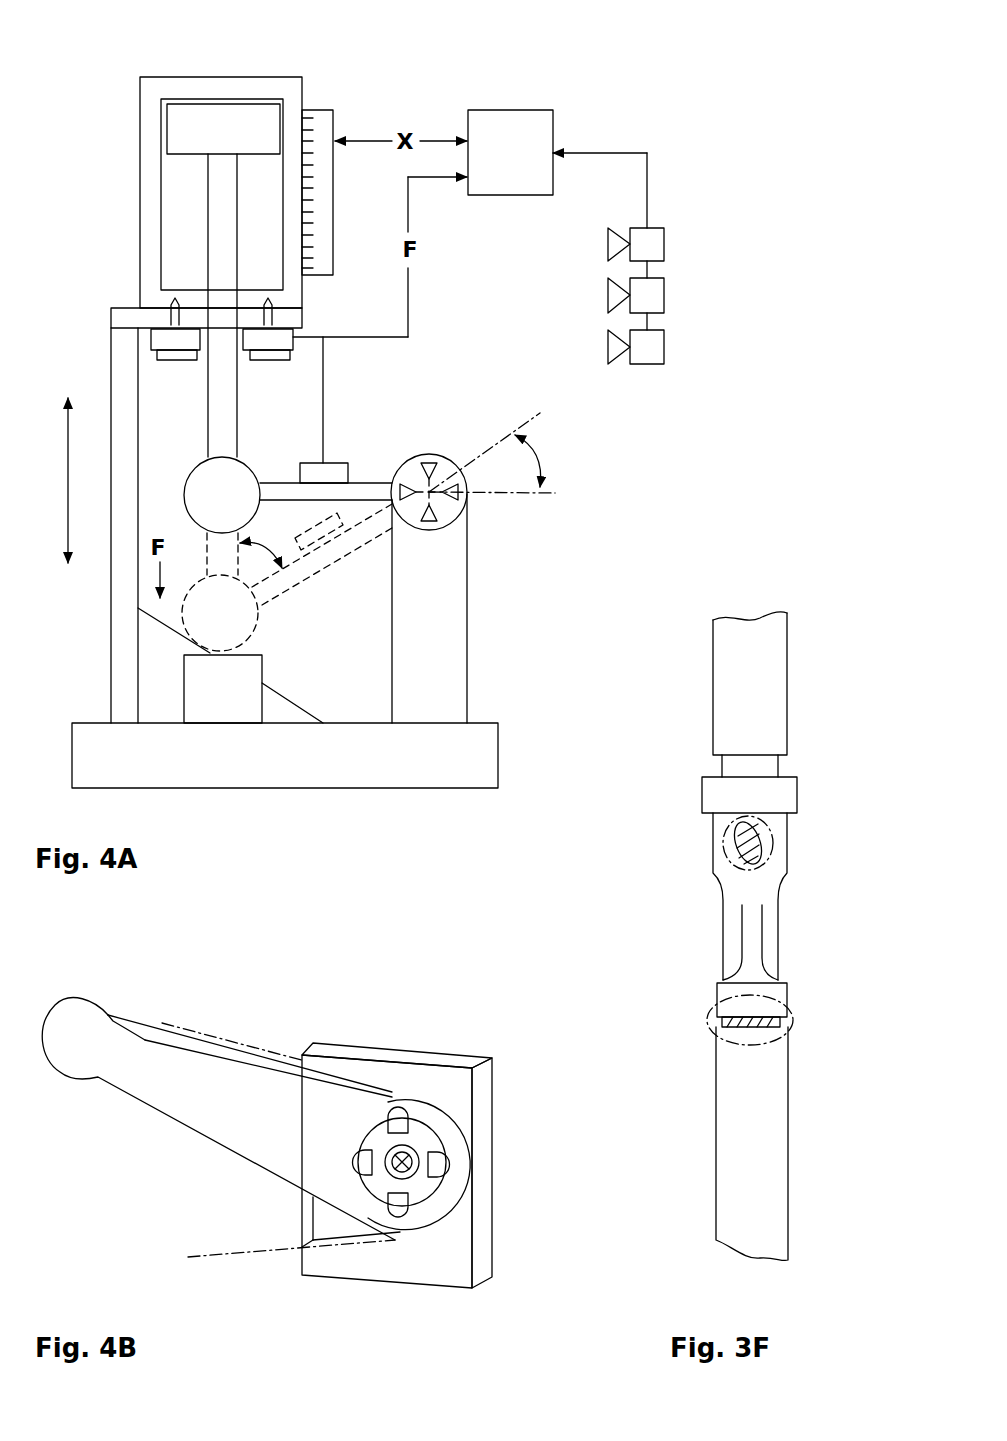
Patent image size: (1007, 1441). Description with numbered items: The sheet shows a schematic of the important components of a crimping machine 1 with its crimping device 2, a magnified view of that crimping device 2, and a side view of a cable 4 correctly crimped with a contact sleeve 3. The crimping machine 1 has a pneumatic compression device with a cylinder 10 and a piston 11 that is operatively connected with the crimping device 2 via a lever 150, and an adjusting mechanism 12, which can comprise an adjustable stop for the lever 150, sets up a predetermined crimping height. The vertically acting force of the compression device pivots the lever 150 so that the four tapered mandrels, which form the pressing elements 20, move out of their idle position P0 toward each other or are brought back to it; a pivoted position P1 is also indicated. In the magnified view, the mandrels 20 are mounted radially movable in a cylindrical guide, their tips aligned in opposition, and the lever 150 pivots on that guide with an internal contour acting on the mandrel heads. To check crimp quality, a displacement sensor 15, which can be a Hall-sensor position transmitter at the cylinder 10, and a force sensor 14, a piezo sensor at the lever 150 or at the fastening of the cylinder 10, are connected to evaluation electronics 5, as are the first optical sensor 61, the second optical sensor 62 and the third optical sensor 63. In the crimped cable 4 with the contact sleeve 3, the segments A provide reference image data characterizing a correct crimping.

In FIG. 4A, the crimping machine 1 is at (106, 53).
In FIG. 4A, the cylinder 10 is at (208, 90).
In FIG. 4A, the piston 11 is at (172, 132).
In FIG. 4A, the displacement sensor 15 is at (325, 140).
In FIG. 4A, the evaluation electronics 5 is at (518, 165).
In FIG. 4A, the first optical sensor 61 is at (655, 243).
In FIG. 4A, the second optical sensor 62 is at (655, 297).
In FIG. 4A, the third optical sensor 63 is at (655, 347).
In FIG. 4A, the force sensor 14 is at (180, 340).
In FIG. 4A, the adjusting mechanism 12 is at (211, 703).
In FIG. 4A, the lever 150 is at (318, 560).
In FIG. 4B, the lever 150 is at (197, 1113).
In FIG. 4A, the crimping device 2 is at (427, 425).
In FIG. 4B, the crimping device 2 is at (380, 945).
In FIG. 4A, the pressing elements 20 is at (467, 493).
In FIG. 4B, the pressing elements 20 is at (400, 1110).
In FIG. 4A, the idle position P0 is at (517, 493).
In FIG. 4B, the idle position P0 is at (232, 1030).
In FIG. 4A, the pivoted position P1 is at (504, 436).
In FIG. 4B, the pivoted position P1 is at (269, 1256).
In FIG. 3F, the contact sleeve 3 is at (783, 783).
In FIG. 3F, the segments A is at (773, 842).
In FIG. 3F, the cable 4 is at (768, 1177).